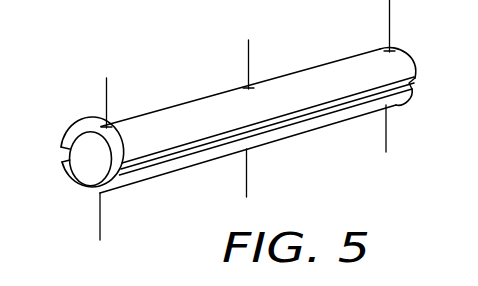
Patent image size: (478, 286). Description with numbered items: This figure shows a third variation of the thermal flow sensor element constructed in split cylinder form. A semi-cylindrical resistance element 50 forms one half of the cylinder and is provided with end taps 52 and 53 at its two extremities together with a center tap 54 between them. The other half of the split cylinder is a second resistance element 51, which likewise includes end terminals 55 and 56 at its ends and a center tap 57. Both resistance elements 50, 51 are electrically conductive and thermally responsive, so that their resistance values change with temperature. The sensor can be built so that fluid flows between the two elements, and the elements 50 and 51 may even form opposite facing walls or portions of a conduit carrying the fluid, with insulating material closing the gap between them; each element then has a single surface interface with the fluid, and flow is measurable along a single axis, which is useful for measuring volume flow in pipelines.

The semi-cylindrical resistance element 50 is at (207, 100).
The resistance element 51 is at (165, 169).
The end tap 52 is at (106, 88).
The end tap 53 is at (390, 12).
The center tap 54 is at (248, 40).
The end terminal 55 is at (100, 222).
The end terminal 56 is at (386, 140).
The center tap 57 is at (246, 178).